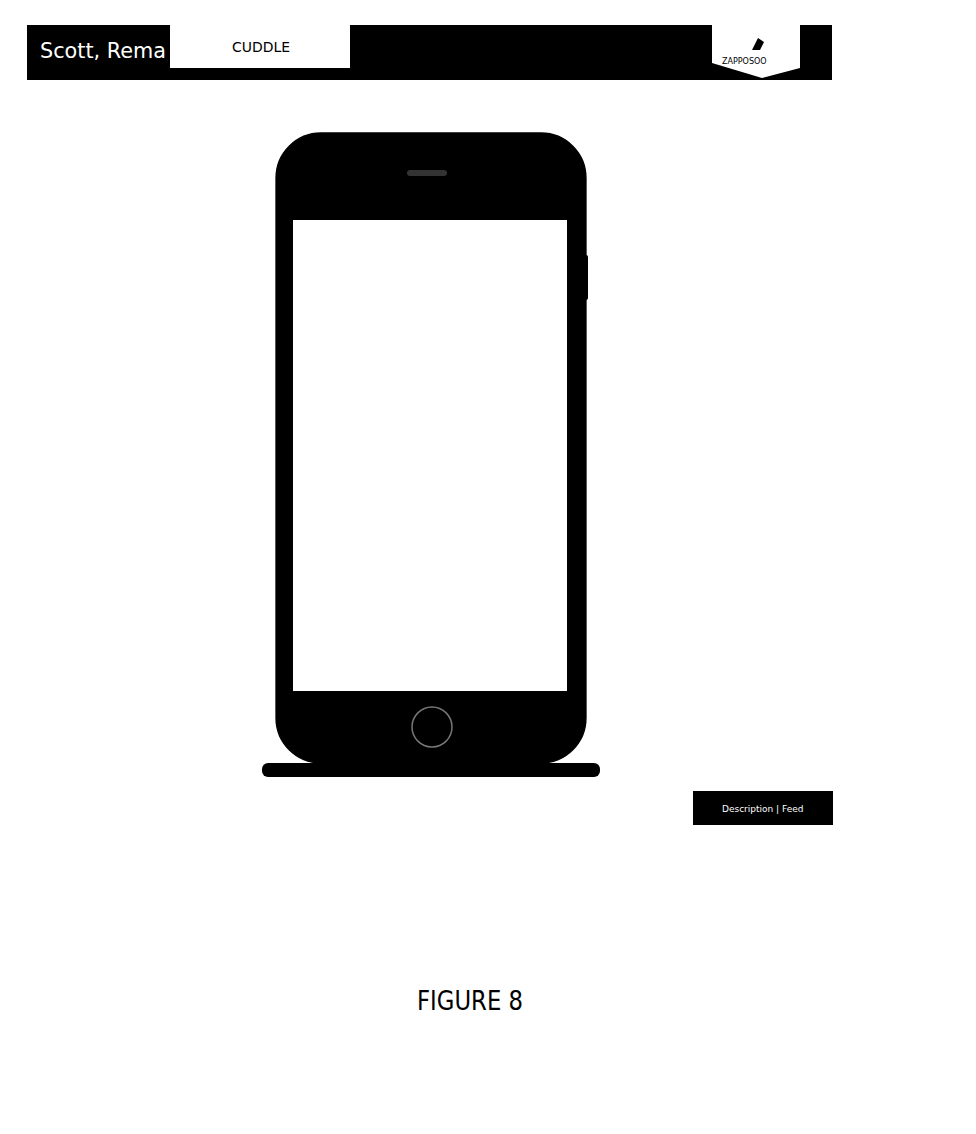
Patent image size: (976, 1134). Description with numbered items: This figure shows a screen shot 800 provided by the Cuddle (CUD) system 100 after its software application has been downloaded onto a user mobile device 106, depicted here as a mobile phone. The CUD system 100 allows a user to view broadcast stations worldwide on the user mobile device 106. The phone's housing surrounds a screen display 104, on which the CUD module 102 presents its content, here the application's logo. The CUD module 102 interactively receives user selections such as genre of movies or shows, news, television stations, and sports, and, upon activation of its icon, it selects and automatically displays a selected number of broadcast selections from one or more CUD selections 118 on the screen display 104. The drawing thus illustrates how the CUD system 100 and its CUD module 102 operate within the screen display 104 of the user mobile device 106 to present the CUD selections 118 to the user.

The Cuddle (CUD) system 100 is at (238, 763).
The screen shot provided by CUD module icon and system 800 is at (238, 763).
The CUD module 102 is at (472, 385).
The screen display 104 is at (530, 663).
The user mobile device 106 is at (582, 533).
The CUD selections 118 is at (643, 319).